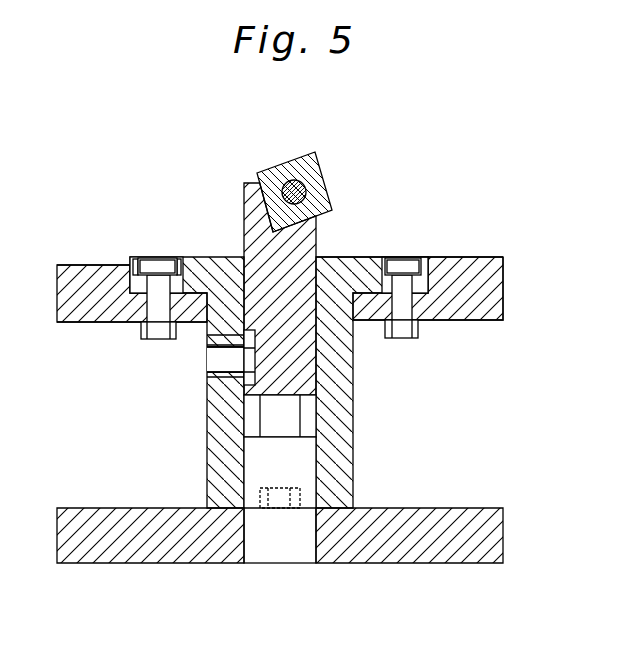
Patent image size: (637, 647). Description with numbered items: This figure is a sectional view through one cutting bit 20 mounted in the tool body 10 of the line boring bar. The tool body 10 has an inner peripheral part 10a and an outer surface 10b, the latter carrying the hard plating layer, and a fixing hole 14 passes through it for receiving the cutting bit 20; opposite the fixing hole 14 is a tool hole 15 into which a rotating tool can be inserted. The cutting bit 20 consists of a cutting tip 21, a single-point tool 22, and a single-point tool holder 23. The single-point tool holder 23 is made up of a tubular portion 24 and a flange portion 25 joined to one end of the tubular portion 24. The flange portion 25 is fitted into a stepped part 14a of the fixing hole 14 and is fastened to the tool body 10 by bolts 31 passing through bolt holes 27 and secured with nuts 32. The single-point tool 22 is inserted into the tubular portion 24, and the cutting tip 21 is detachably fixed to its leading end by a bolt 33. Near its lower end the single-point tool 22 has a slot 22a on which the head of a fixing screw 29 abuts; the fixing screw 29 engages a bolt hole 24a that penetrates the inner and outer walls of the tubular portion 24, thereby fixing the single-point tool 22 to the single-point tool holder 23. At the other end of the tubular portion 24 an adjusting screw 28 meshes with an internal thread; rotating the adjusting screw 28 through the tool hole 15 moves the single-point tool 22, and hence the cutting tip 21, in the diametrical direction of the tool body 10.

The tool body 10 is at (58, 264).
The inner peripheral part 10a is at (80, 325).
The surface 10b is at (108, 264).
The fixing hole 14 is at (208, 302).
The stepped part 14a is at (134, 258).
The tool hole 15 is at (245, 537).
The cutting bit 20 is at (434, 248).
The cutting tip 21 is at (308, 163).
The single-point tool 22 is at (305, 236).
The slot 22a is at (208, 337).
The single-point tool holder 23 is at (514, 210).
The tubular portion 24 is at (337, 436).
The bolt hole 24a is at (239, 377).
The flange portion 25 is at (398, 290).
The bolt hole 27 is at (170, 284).
The adjusting screw 28 is at (300, 478).
The fixing screw 29 is at (218, 362).
The bolt 31 is at (162, 264).
The nut 32 is at (149, 330).
The bolt 33 is at (284, 173).